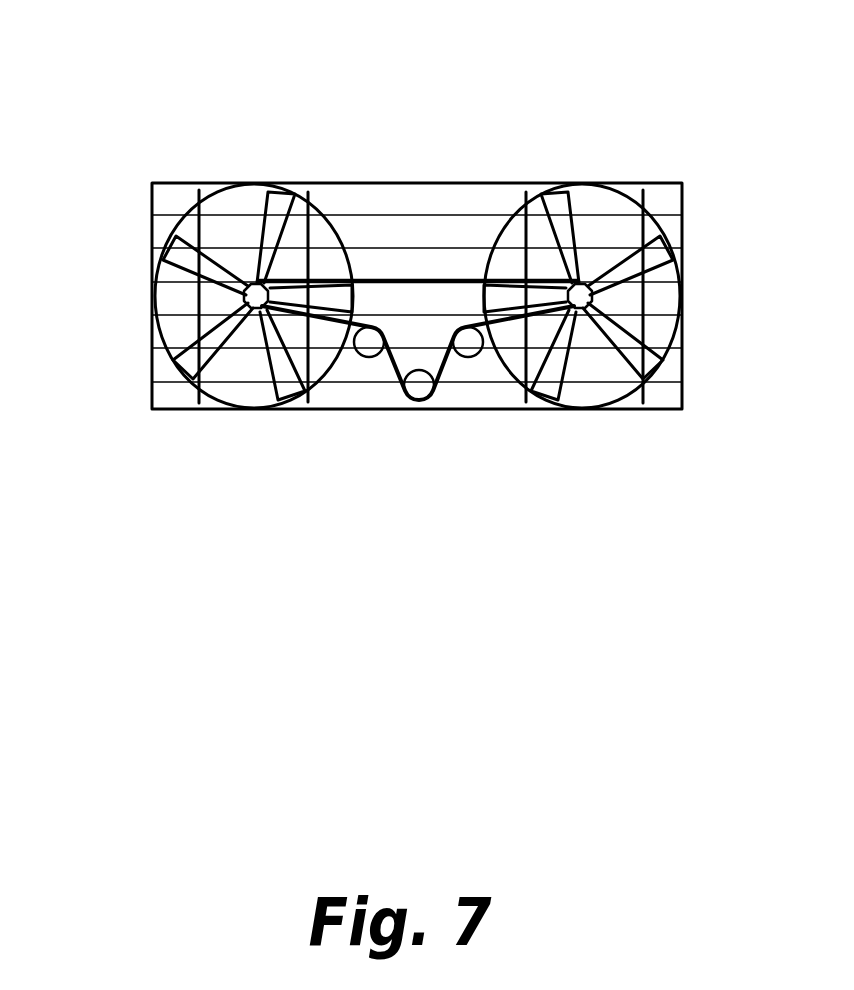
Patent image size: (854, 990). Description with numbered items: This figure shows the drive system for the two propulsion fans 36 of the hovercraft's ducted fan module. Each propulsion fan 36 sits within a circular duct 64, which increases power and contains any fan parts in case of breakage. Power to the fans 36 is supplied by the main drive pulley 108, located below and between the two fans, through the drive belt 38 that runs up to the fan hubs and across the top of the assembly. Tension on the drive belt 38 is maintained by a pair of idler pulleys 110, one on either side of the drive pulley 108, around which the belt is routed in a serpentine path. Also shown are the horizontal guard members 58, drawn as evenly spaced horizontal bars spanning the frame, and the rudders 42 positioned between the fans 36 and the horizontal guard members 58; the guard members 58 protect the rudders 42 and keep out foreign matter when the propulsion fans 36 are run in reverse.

The propulsion fan 36 is at (337, 292).
The drive belt 38 is at (454, 358).
The rudder 42 is at (312, 197).
The horizontal guard member 58 is at (440, 318).
The circular duct 64 is at (178, 224).
The drive pulley 108 is at (419, 400).
The idler pulley 110 is at (366, 357).